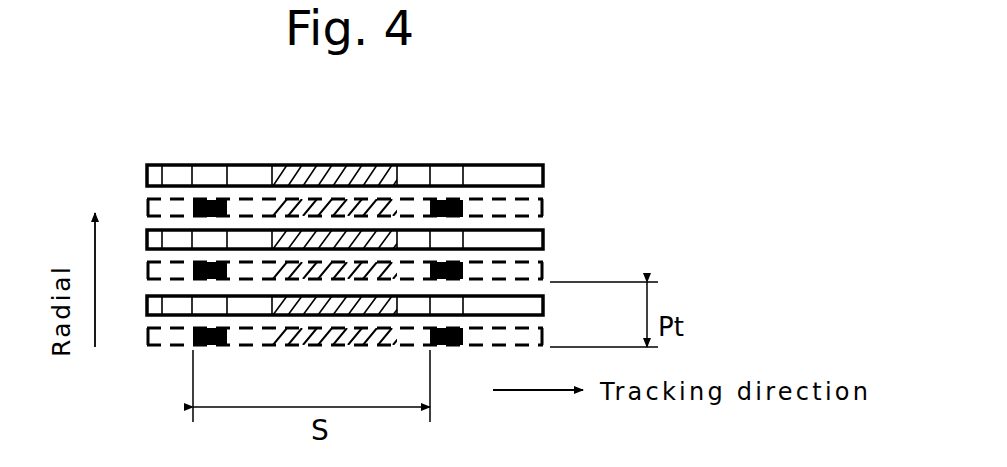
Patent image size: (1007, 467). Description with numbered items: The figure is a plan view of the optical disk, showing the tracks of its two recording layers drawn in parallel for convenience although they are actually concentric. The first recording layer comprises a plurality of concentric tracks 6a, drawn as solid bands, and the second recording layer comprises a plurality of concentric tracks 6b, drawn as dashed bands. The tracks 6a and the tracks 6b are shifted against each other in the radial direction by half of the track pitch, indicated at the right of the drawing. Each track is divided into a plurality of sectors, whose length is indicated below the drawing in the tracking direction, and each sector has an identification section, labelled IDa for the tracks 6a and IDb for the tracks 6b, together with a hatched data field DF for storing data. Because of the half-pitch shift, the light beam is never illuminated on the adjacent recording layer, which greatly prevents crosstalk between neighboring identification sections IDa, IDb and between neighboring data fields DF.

The concentric tracks of the first recording layer 6a is at (513, 307).
The concentric tracks of the second recording layer 6b is at (542, 340).
The identification section of track 6a IDa is at (205, 304).
The identification section of track 6b IDb is at (233, 328).
The data field DF is at (345, 182).